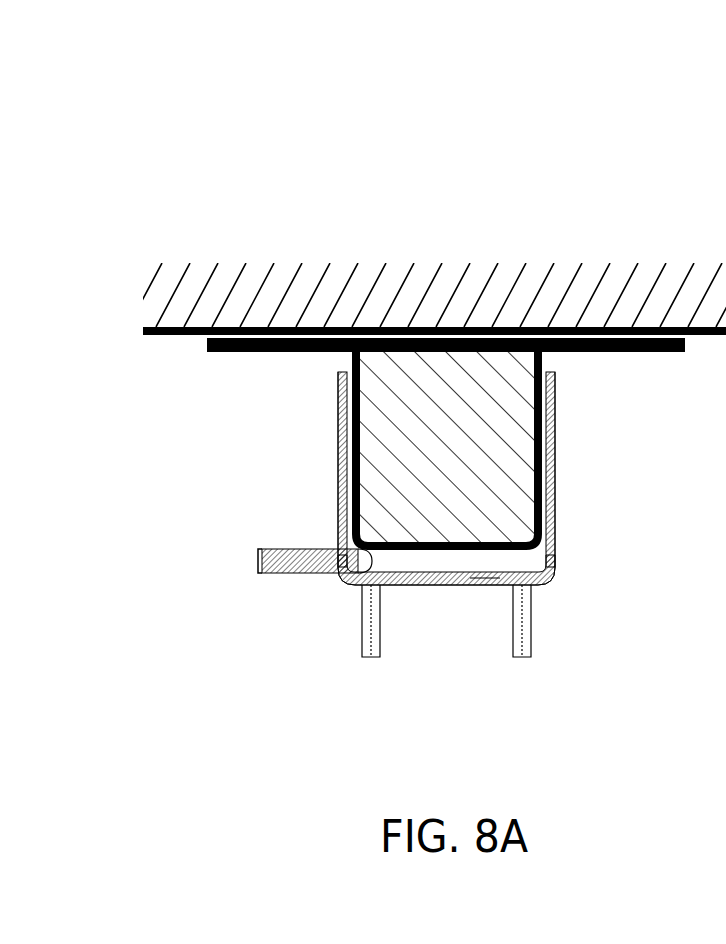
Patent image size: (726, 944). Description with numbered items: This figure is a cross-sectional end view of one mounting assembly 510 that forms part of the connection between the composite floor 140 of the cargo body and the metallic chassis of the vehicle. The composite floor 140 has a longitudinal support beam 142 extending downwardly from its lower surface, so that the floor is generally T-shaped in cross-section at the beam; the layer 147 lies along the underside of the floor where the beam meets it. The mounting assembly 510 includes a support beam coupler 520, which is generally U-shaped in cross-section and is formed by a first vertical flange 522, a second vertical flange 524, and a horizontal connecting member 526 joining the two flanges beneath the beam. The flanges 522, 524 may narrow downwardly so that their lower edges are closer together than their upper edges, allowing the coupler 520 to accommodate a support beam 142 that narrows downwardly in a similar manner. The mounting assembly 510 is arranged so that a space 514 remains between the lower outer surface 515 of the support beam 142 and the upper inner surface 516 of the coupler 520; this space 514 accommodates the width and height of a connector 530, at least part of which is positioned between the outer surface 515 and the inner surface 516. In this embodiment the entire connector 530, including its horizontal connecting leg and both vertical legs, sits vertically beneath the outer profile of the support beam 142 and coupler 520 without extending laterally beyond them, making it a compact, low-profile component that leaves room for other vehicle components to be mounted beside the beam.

The composite floor 140 is at (257, 295).
The longitudinal support beam 142 is at (458, 375).
The adhesive layer 147 is at (262, 352).
The mounting assembly 510 is at (558, 587).
The space 514 is at (258, 562).
The lower outer surface 515 is at (405, 549).
The upper inner surface 516 is at (483, 580).
The support beam coupler 520 is at (552, 506).
The first vertical flange 522 is at (343, 408).
The second vertical flange 524 is at (548, 408).
The horizontal connecting member 526 is at (442, 586).
The connector 530 is at (361, 612).